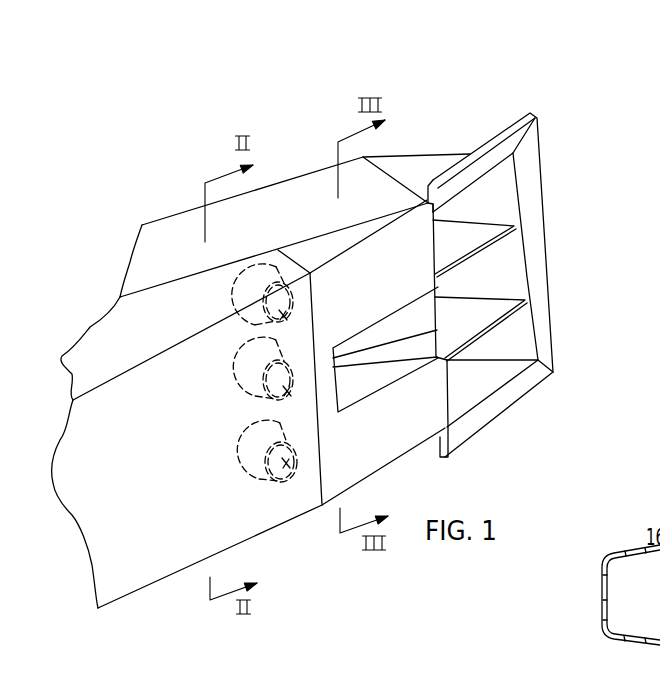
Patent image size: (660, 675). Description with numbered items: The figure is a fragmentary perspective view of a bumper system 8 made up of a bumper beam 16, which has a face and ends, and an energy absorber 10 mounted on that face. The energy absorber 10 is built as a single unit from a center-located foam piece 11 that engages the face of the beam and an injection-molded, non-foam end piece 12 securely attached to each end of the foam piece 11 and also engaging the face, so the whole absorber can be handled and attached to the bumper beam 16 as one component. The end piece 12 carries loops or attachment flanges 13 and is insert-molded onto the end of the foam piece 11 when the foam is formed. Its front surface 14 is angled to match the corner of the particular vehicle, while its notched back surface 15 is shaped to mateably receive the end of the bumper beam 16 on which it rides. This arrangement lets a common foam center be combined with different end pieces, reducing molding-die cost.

The bumper system 8 is at (287, 157).
The energy absorber 10 is at (568, 105).
The foam piece 11 is at (140, 552).
The end piece 12 is at (470, 425).
The attachment flanges 13 is at (283, 316).
The front surface 14 is at (500, 345).
The notched back surface 15 is at (413, 206).
The bumper beam 16 is at (170, 228).